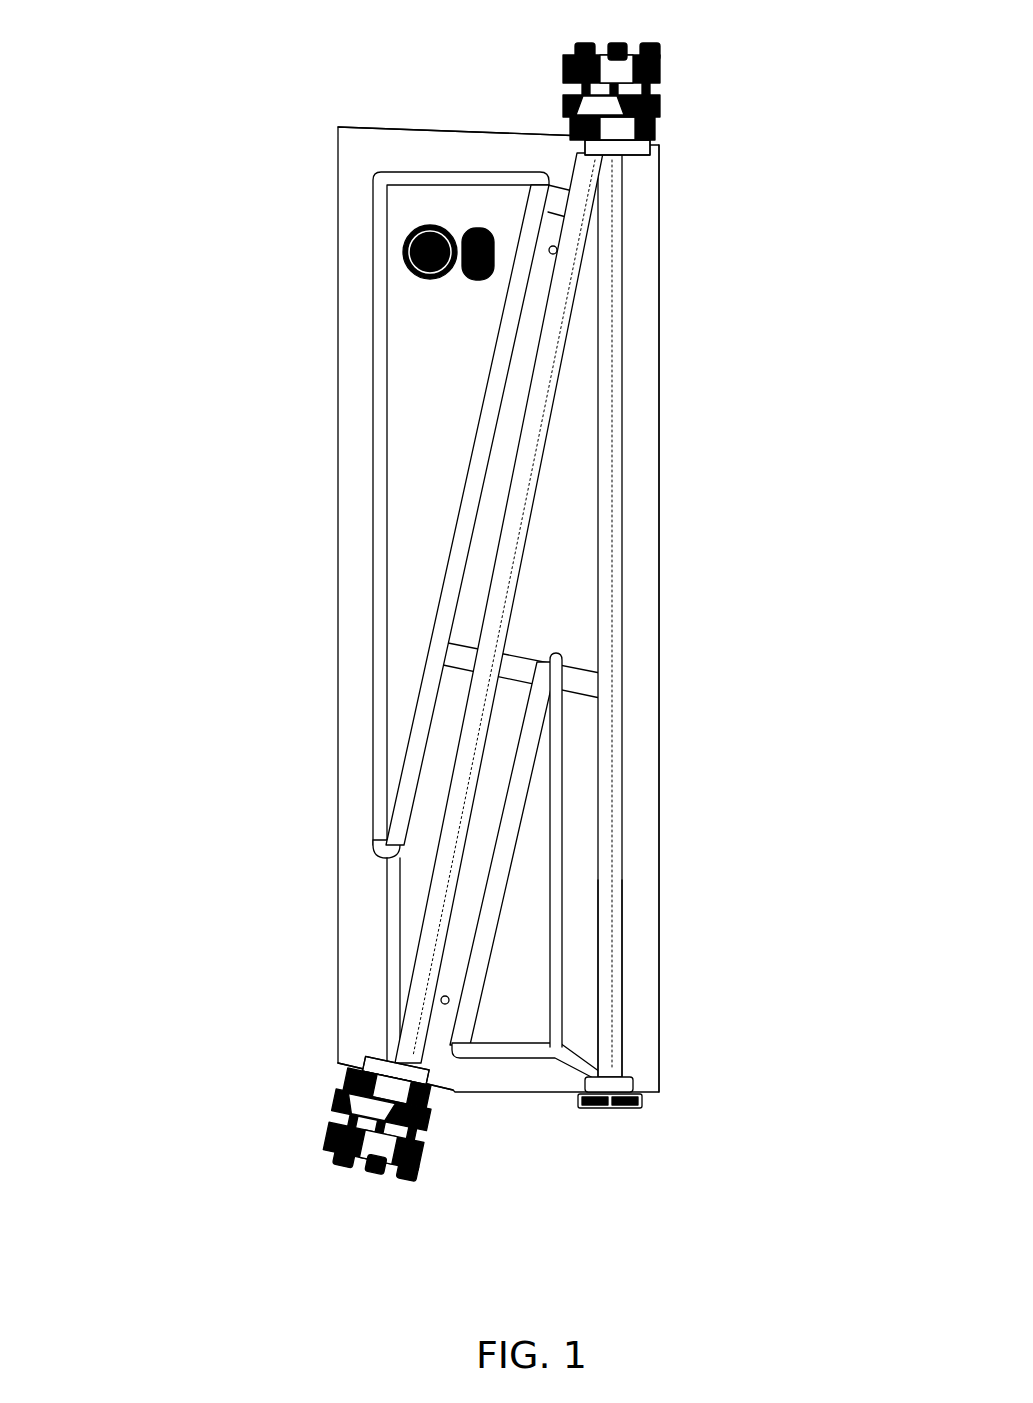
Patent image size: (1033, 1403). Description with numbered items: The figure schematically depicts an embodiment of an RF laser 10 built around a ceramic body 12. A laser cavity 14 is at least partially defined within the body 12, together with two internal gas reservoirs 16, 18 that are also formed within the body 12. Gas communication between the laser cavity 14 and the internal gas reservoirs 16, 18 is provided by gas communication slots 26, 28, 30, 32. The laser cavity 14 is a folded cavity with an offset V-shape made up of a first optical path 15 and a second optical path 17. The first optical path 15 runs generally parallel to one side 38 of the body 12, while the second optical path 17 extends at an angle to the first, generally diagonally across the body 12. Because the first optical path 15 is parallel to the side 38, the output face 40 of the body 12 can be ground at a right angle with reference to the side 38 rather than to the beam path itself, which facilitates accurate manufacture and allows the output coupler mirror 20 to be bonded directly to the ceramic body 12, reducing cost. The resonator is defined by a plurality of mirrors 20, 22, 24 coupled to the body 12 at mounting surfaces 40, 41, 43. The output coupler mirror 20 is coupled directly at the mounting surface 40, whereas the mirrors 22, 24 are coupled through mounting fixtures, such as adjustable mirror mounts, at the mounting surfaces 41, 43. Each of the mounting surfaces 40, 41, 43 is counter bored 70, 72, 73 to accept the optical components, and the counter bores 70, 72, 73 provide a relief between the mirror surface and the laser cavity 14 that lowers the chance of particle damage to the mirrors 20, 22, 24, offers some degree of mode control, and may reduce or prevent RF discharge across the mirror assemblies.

The RF laser 10 is at (212, 113).
The body 12 is at (330, 470).
The laser cavity 14 is at (632, 430).
The first optical path 15 is at (618, 900).
The internal gas reservoir 16 is at (512, 980).
The second optical path 17 is at (442, 857).
The internal gas reservoir 18 is at (397, 628).
The output coupler mirror 20 is at (607, 1107).
The mirror 22 is at (635, 62).
The mirror 24 is at (387, 1157).
The gas communication slot 26 is at (392, 945).
The gas communication slot 28 is at (573, 1053).
The gas communication slot 30 is at (573, 680).
The gas communication slot 32 is at (563, 197).
The side of the body 38 is at (663, 760).
The output face 40 is at (565, 1093).
The mounting surface 41 is at (538, 133).
The mounting surface 43 is at (350, 1068).
The counter bore 70 is at (625, 1087).
The counter bore 72 is at (373, 1068).
The counter bore 73 is at (630, 152).